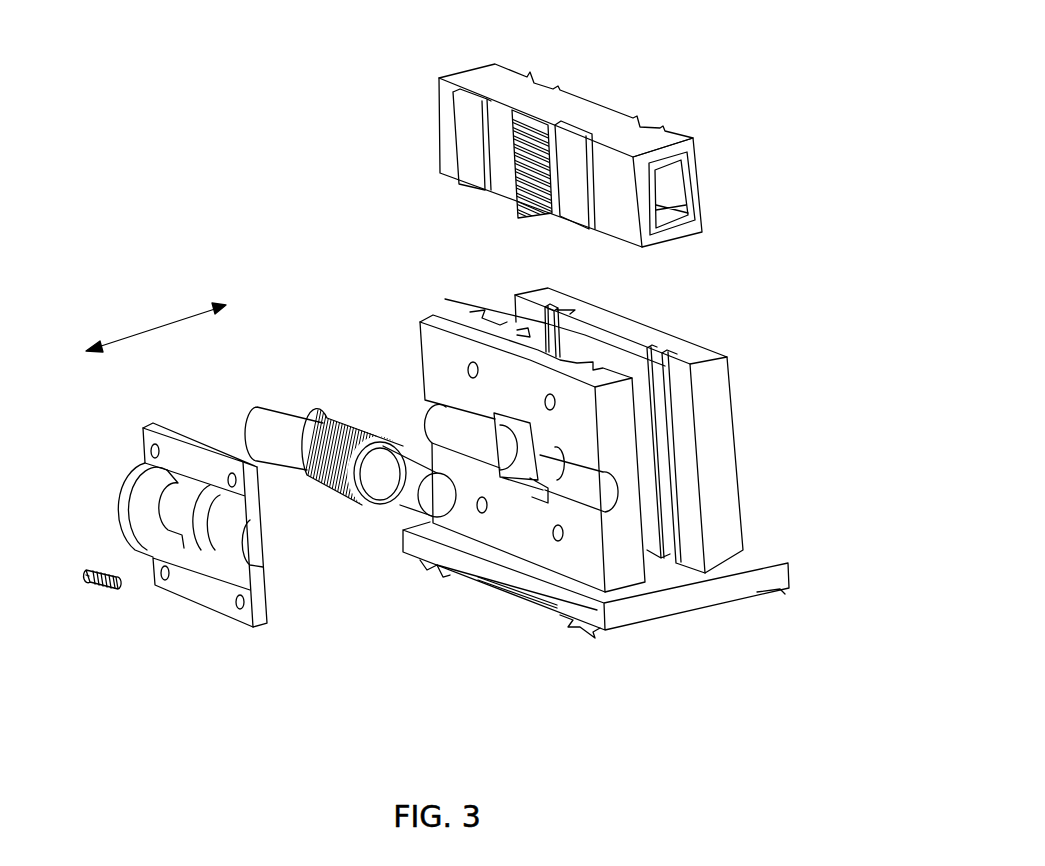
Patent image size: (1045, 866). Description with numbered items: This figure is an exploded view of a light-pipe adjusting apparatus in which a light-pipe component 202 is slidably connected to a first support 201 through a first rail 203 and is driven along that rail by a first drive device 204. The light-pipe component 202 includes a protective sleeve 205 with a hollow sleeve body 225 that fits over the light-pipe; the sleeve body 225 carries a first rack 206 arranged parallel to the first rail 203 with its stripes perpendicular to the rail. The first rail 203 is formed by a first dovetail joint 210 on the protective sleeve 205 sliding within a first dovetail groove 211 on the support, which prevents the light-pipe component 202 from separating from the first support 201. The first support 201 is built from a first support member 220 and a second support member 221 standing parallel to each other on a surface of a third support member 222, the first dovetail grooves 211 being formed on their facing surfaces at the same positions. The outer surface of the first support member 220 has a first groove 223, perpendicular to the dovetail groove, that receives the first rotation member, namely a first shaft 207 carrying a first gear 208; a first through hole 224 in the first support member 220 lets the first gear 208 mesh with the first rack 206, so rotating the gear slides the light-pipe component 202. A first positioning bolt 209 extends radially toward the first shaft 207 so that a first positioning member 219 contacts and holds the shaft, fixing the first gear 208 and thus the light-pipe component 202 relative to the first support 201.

The first support 201 is at (765, 708).
The light-pipe component 202 is at (668, 192).
The first rail 203 is at (323, 199).
The first drive device 204 is at (367, 625).
The protective sleeve 205 is at (568, 110).
The first rack 206 is at (522, 194).
The first shaft 207 is at (272, 445).
The first gear 208 is at (350, 502).
The first positioning bolt 209 is at (110, 588).
The first dovetail joint 210 is at (467, 157).
The first dovetail groove 211 is at (512, 320).
The first positioning member 219 is at (194, 583).
The first support member 220 is at (463, 530).
The second support member 221 is at (723, 552).
The third support member 222 is at (652, 607).
The first groove 223 is at (580, 497).
The first through hole 224 is at (537, 490).
The sleeve body 225 is at (668, 130).